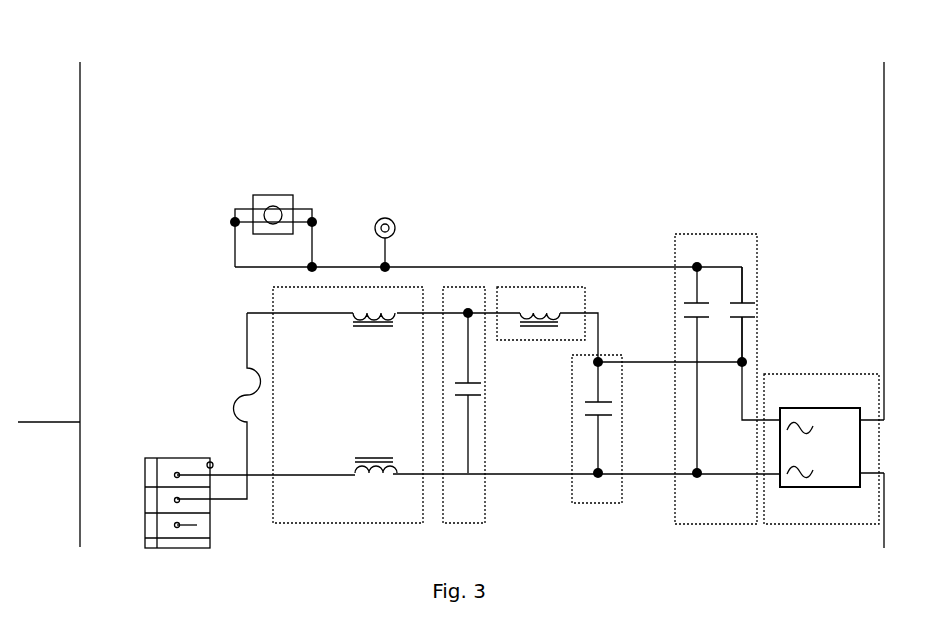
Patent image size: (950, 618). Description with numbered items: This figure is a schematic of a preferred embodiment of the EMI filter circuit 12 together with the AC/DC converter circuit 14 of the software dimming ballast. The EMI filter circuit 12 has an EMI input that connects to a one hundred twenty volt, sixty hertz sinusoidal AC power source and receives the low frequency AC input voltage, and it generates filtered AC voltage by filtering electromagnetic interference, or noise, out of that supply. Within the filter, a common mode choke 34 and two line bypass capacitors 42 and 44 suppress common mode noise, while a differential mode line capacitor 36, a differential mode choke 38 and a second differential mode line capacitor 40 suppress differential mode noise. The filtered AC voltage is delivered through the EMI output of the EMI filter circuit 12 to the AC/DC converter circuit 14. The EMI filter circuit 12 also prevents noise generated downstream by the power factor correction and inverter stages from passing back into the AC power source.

The EMI filter circuit 12 is at (451, 290).
The common mode choke 34 is at (402, 287).
The differential mode line capacitor 36 is at (470, 287).
The differential mode choke 38 is at (533, 285).
The second differential mode line capacitor 40 is at (600, 505).
The line bypass capacitor 42 is at (704, 297).
The line bypass capacitor 44 is at (751, 297).
The AC/DC converter circuit 14 is at (812, 373).